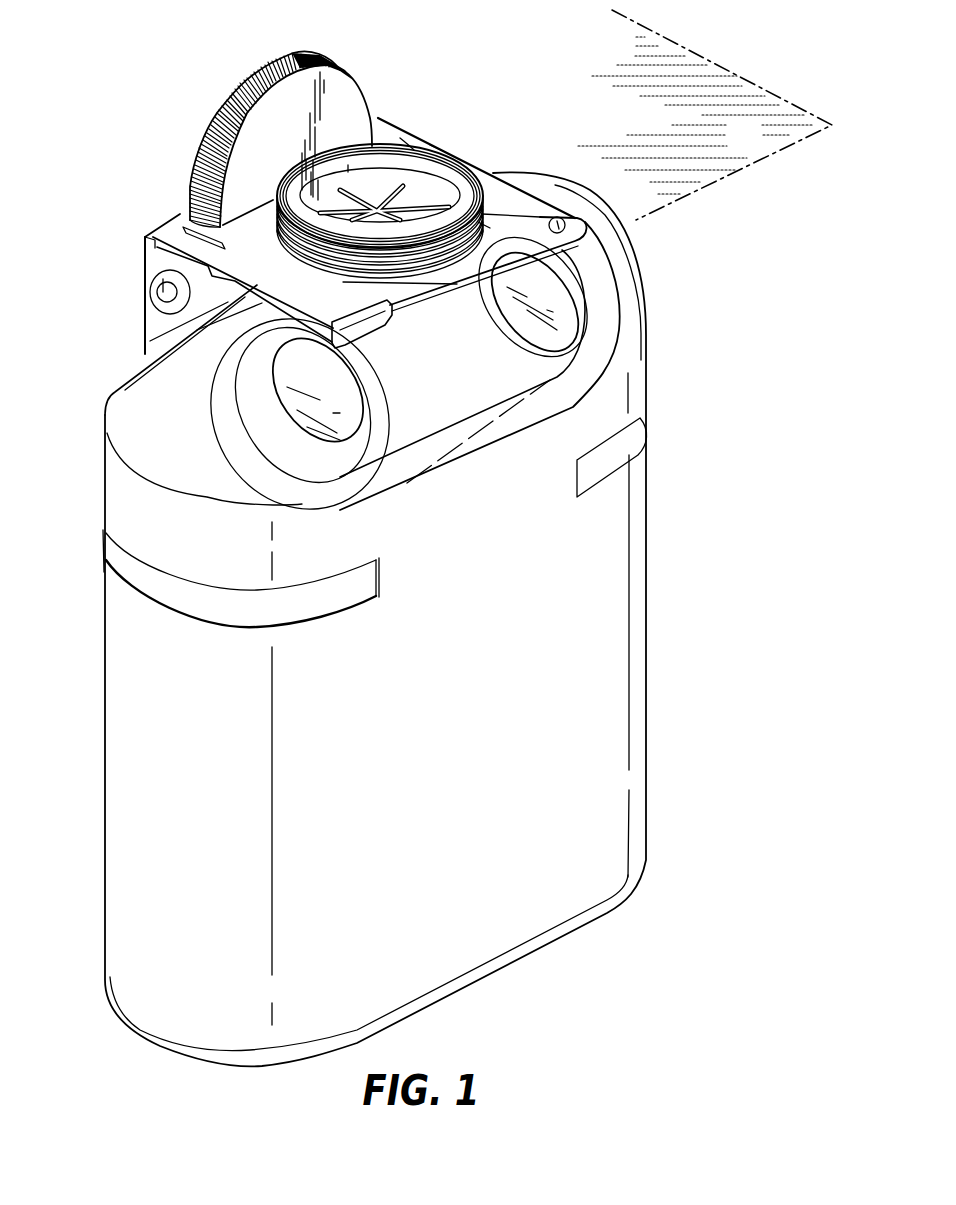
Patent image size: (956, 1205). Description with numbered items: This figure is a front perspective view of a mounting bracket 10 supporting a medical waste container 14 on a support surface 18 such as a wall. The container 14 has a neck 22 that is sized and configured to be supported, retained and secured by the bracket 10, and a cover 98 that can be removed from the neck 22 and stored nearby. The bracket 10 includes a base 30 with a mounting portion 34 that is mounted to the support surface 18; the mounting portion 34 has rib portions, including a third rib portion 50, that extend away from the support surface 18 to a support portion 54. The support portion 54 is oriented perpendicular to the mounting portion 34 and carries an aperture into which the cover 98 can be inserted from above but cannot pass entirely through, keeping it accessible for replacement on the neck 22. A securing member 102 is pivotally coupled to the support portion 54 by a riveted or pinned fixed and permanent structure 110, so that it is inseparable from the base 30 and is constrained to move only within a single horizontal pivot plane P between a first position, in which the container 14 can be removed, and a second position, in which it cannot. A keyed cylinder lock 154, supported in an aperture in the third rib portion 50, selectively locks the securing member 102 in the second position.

The mounting bracket 10 is at (437, 140).
The medical waste container 14 is at (637, 680).
The support surface 18 is at (122, 178).
The neck 22 is at (480, 203).
The base 30 is at (380, 117).
The mounting portion 34 is at (143, 306).
The third rib portion 50 is at (158, 328).
The support portion 54 is at (405, 140).
The cover 98 is at (228, 93).
The securing member 102 is at (482, 229).
The fixed and permanent structure 110 is at (585, 215).
The lock 154 is at (153, 287).
The pivot plane P is at (753, 150).